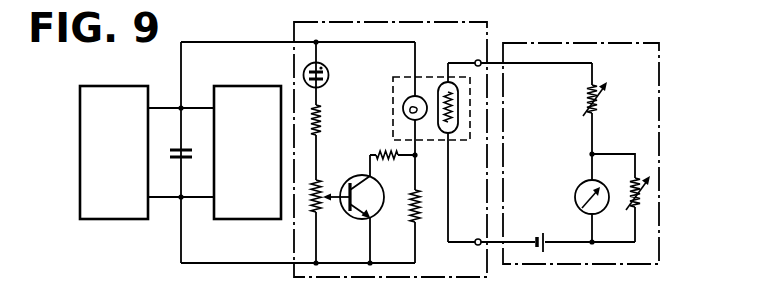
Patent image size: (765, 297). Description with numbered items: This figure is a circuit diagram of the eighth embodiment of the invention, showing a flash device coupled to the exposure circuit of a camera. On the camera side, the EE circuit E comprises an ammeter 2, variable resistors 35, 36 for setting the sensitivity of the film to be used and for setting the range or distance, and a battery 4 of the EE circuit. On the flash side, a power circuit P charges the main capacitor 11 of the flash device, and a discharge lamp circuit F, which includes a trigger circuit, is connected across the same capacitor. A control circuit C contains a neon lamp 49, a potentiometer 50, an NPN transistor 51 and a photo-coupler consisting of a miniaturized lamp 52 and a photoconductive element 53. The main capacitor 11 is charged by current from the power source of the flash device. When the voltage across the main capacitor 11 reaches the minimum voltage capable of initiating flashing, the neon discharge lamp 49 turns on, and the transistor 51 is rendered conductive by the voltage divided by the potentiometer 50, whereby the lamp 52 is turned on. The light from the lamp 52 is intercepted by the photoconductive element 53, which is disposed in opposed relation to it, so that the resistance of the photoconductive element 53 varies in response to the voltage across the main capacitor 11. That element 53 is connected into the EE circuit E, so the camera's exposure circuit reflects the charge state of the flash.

The power circuit P is at (126, 86).
The discharge lamp circuit F is at (251, 86).
The control circuit C is at (294, 24).
The EE circuit E is at (659, 46).
The main capacitor 11 is at (186, 147).
The neon lamp 49 is at (329, 68).
The potentiometer 50 is at (323, 210).
The NPN transistor 51 is at (350, 180).
The miniaturized lamp 52 is at (403, 107).
The photoconductive element 53 is at (451, 133).
The variable resistor 36 is at (603, 101).
The variable resistor 35 is at (643, 194).
The ammeter 2 is at (575, 187).
The battery 4 is at (537, 232).